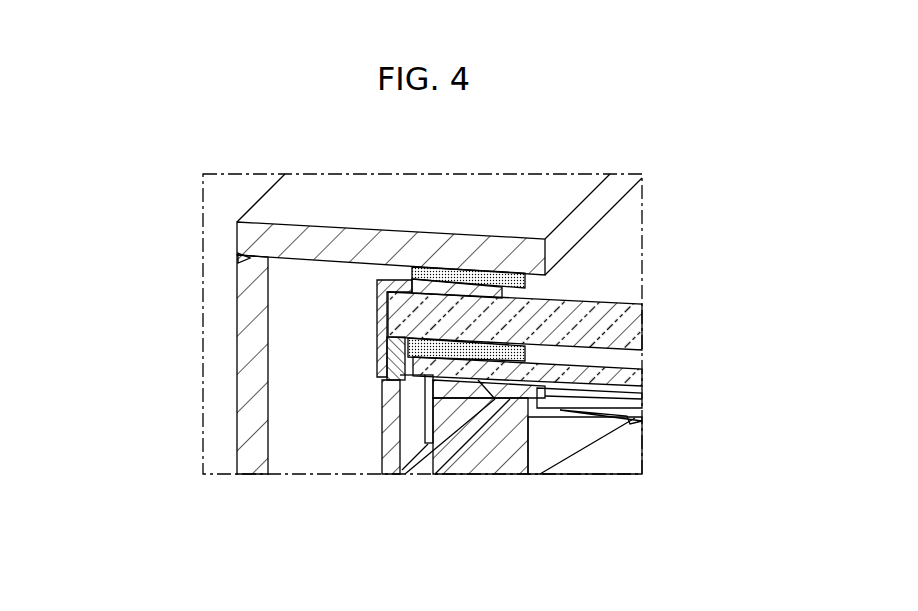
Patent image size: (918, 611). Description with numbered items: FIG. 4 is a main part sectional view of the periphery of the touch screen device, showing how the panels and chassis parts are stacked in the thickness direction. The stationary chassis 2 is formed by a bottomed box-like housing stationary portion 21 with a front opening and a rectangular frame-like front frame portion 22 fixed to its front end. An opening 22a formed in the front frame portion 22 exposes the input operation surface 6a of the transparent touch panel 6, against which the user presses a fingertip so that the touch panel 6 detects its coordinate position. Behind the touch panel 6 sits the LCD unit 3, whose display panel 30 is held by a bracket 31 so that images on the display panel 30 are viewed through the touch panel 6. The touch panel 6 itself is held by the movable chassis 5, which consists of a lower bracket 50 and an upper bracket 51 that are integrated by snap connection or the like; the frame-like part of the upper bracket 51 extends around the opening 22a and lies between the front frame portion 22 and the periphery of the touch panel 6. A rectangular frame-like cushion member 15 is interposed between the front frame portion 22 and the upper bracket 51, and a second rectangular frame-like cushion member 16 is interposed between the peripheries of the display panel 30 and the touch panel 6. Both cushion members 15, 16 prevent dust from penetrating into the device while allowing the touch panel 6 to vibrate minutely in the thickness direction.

The stationary chassis 2 is at (126, 227).
The front frame portion 22 is at (247, 238).
The housing stationary portion 21 is at (247, 307).
The opening 22a is at (587, 213).
The cushion member 15 is at (455, 272).
The cushion member 16 is at (474, 345).
The touch panel 6 is at (632, 318).
The input operation surface 6a is at (623, 235).
The LCD unit 3 is at (715, 378).
The display panel 30 is at (637, 380).
The bracket 31 is at (633, 421).
The movable chassis 5 is at (292, 503).
The upper bracket 51 is at (382, 318).
The lower bracket 50 is at (387, 378).